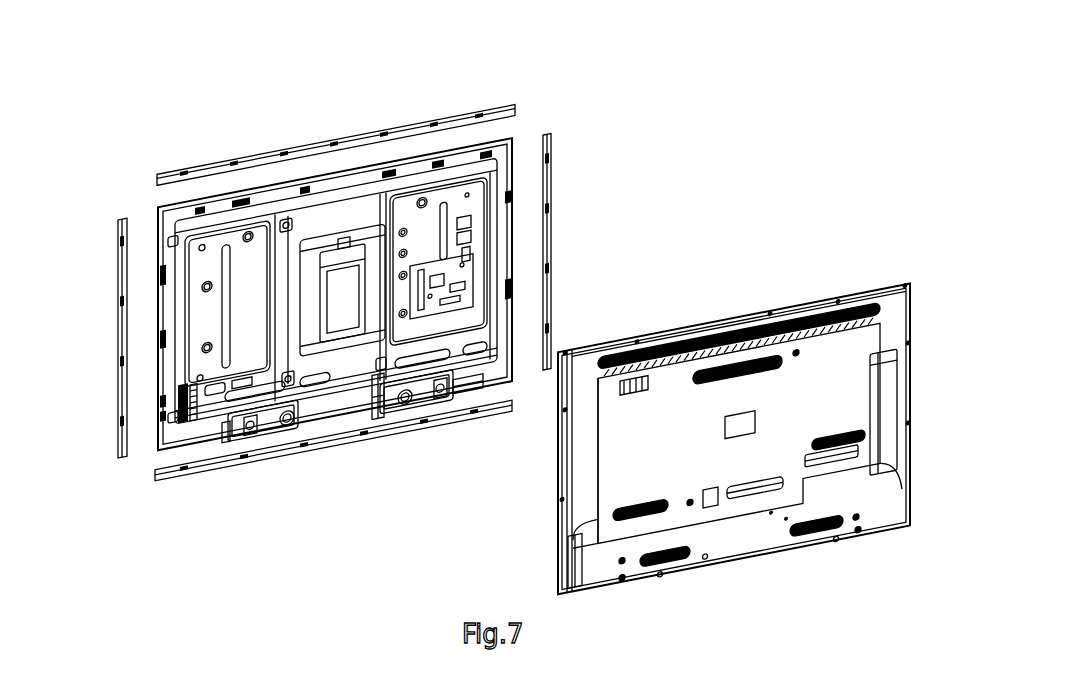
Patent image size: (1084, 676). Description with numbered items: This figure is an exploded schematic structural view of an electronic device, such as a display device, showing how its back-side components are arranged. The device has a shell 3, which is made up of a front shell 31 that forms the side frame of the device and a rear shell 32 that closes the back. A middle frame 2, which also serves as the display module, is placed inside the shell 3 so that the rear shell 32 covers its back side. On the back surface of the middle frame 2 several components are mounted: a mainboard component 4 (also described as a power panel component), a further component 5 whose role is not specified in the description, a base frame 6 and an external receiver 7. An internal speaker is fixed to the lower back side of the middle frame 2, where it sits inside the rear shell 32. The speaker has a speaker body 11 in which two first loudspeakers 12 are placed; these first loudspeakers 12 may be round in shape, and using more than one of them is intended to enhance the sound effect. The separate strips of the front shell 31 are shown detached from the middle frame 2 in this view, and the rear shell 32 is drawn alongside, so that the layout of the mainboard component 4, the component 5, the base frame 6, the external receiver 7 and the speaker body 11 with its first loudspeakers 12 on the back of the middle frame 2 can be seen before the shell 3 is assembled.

The middle frame 2 is at (160, 207).
The shell 3 is at (638, 190).
The front shell 31 is at (232, 163).
The rear shell 32 is at (679, 332).
The mainboard component 4 is at (460, 272).
The main board box 5 is at (347, 250).
The base frame 6 is at (477, 387).
The external receiver 7 is at (378, 410).
The speaker body 11 is at (425, 395).
The first loudspeaker 12 is at (447, 403).